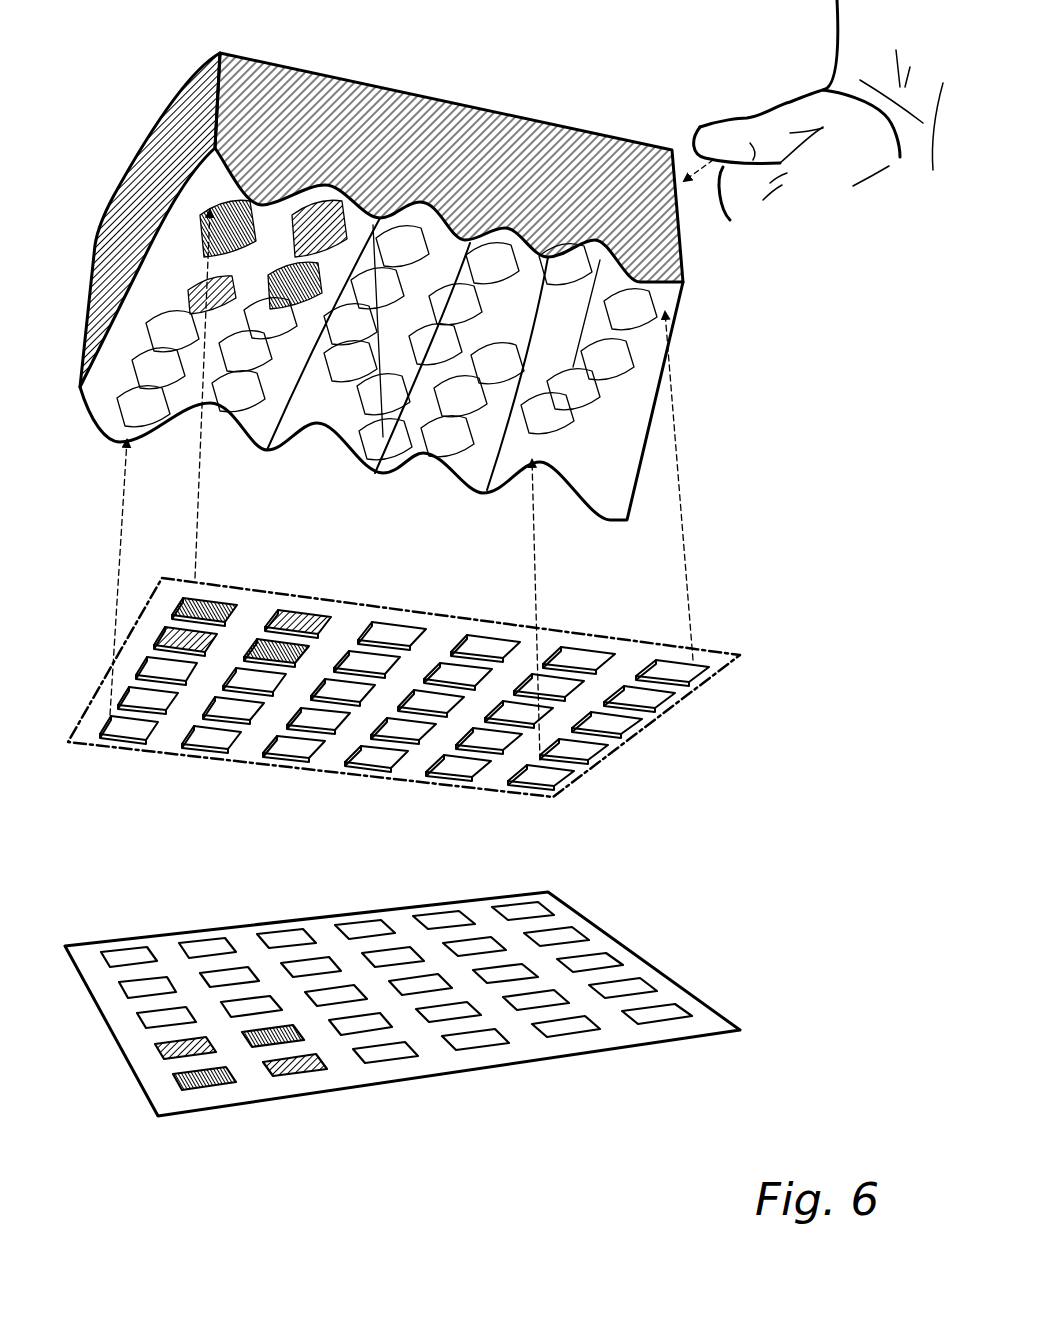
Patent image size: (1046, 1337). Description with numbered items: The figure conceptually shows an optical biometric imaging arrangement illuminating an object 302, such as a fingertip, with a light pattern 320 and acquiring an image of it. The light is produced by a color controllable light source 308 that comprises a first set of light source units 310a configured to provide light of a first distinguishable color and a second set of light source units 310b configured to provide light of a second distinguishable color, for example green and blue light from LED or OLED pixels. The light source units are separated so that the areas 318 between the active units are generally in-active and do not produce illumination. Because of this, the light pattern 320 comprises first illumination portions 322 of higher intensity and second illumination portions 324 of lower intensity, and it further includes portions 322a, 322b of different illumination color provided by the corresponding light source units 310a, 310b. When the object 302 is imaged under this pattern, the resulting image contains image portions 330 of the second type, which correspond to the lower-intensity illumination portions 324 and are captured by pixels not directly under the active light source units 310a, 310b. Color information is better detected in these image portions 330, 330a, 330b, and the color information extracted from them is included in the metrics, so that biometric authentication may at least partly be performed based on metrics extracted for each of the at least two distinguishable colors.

The object 302 is at (682, 233).
The color controllable light source 308 is at (459, 676).
The first set of light source units 310a is at (300, 620).
The second set of light source units 310b is at (178, 605).
The areas between the active light source units 318 is at (227, 643).
The light pattern 320 is at (339, 433).
The first illumination portions 322 is at (602, 291).
The first-color illumination portion 322a is at (320, 215).
The second-color illumination portion 322b is at (230, 215).
The second illumination portions 324 is at (666, 312).
The image portions of the second type 330 is at (398, 1027).
The first-color image portion 330a is at (177, 1042).
The second-color image portion 330b is at (270, 1025).